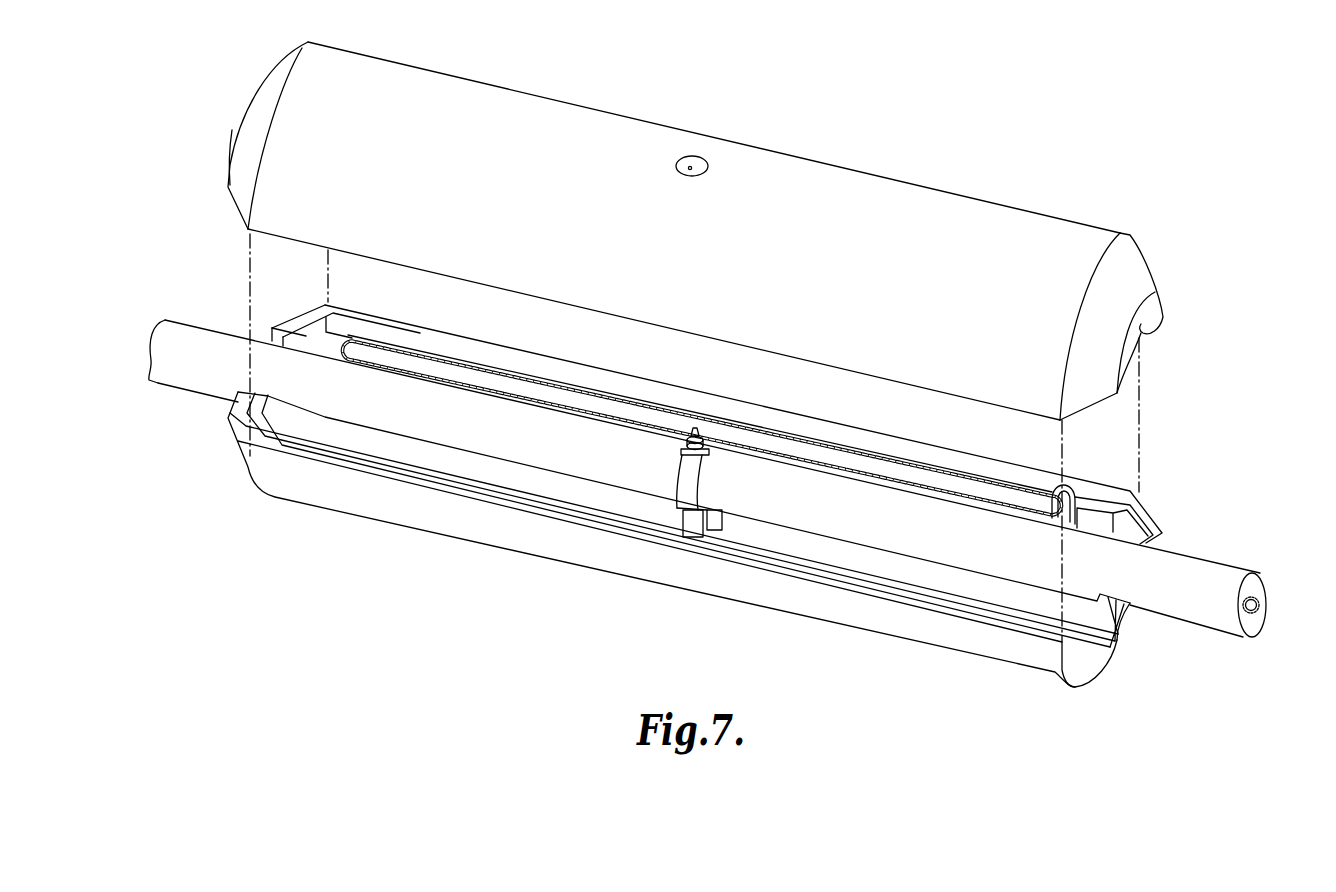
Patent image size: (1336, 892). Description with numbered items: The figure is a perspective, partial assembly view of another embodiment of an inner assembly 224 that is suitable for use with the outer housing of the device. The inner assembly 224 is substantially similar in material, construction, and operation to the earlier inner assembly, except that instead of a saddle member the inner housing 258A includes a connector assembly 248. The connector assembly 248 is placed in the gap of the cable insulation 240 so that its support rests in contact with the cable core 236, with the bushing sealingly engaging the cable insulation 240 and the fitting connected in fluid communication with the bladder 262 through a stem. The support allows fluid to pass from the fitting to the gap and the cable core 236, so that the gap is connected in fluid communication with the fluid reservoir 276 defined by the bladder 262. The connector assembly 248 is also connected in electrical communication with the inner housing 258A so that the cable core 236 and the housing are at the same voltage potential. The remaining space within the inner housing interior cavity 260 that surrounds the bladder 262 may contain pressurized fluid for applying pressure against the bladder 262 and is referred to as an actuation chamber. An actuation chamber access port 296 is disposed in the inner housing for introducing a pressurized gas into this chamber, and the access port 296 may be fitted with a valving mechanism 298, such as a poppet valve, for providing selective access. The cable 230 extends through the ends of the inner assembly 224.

The inner assembly 224 is at (1170, 189).
The inner housing 258A is at (232, 146).
The actuation chamber access port 296 is at (704, 156).
The valving mechanism 298 is at (689, 164).
The inner housing interior cavity 260 is at (458, 484).
The fluid reservoir 276 is at (958, 489).
The bladder 262 is at (1067, 488).
The tube 230 is at (185, 338).
The cable insulation 240 is at (1194, 562).
The cable core 236 is at (1258, 612).
The connector assembly 248 is at (673, 452).